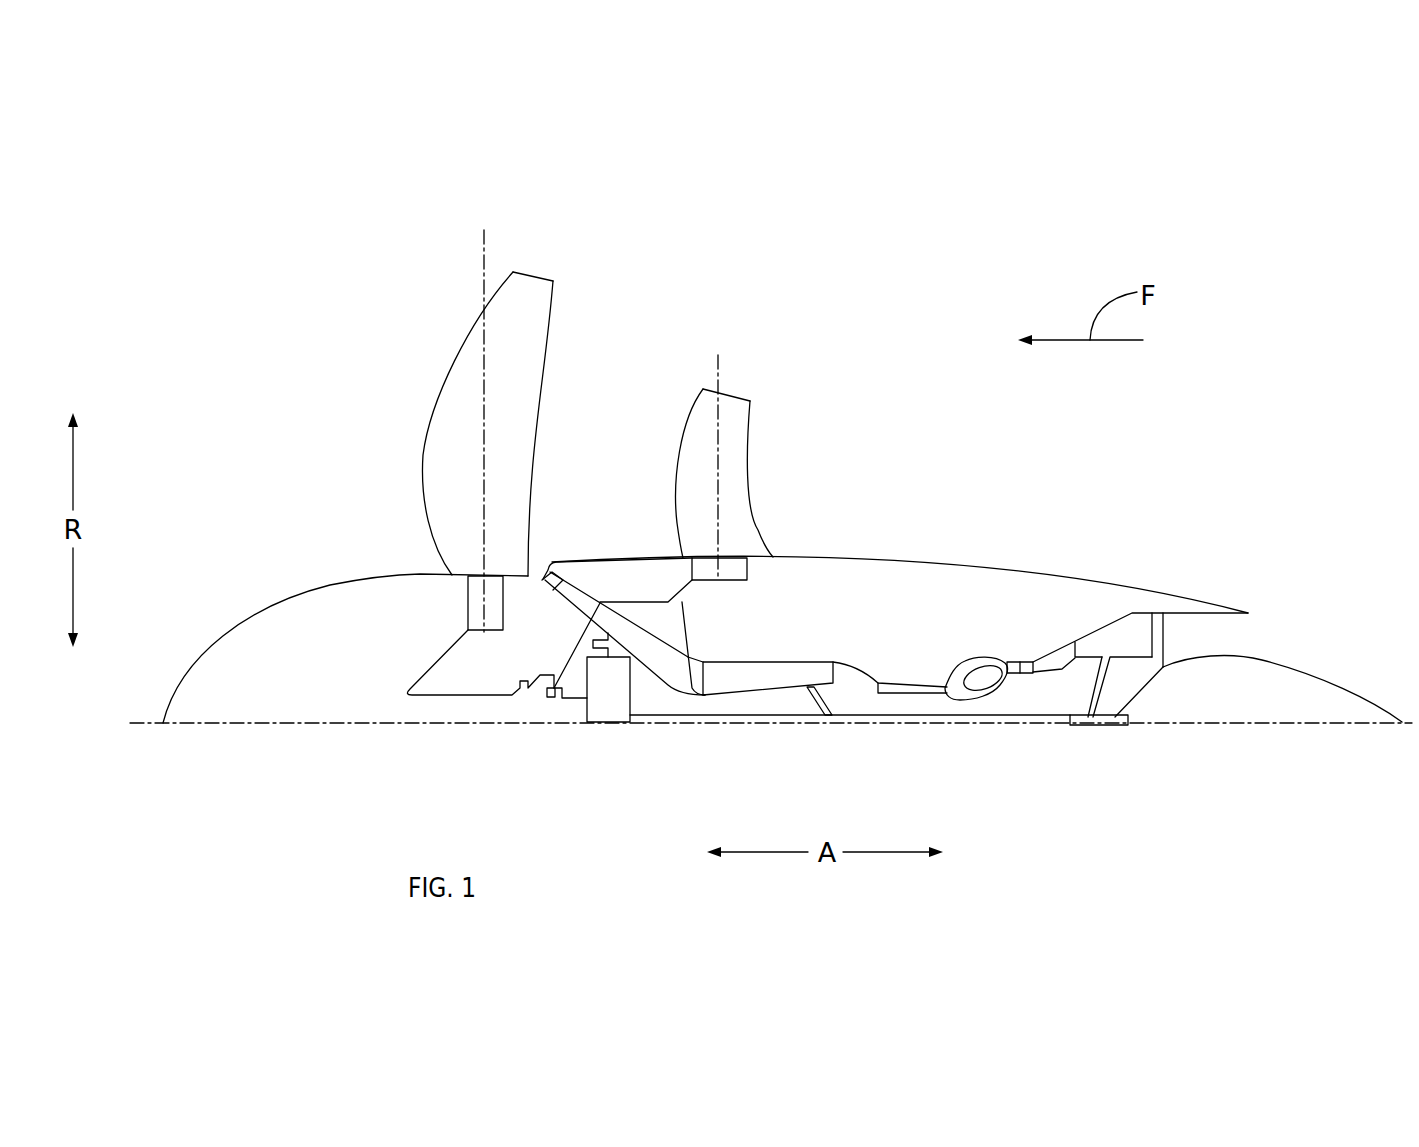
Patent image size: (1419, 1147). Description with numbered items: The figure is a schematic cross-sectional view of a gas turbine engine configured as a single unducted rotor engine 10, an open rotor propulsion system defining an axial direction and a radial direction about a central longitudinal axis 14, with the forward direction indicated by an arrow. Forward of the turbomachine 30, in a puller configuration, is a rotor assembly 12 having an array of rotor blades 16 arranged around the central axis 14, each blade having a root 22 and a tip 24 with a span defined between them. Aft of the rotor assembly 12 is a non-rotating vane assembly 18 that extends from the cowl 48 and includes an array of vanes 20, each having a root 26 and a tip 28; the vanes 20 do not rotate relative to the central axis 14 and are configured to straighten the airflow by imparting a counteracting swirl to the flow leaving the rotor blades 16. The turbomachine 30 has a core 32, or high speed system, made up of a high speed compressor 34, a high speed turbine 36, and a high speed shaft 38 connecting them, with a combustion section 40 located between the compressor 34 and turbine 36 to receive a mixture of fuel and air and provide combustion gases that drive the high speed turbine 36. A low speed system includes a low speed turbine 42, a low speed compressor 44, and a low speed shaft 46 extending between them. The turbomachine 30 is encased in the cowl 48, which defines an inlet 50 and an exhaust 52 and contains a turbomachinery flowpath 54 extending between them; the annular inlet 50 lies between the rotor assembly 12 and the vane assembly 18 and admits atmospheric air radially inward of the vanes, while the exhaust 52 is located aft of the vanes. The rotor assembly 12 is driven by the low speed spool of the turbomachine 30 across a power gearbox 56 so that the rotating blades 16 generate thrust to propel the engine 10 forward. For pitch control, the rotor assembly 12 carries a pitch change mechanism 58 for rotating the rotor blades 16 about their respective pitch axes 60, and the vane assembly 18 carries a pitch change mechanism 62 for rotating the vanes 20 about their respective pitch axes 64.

The single unducted rotor engine 10 is at (750, 235).
The rotor assembly 12 is at (352, 464).
The central longitudinal axis 14 is at (413, 727).
The rotor blades 16 is at (430, 418).
The vane assembly 18 is at (862, 305).
The vanes 20 is at (750, 480).
The root 22 is at (444, 565).
The tip 24 is at (537, 280).
The root 26 is at (763, 547).
The tip 28 is at (732, 393).
The turbomachine 30 is at (884, 526).
The core 32 is at (874, 604).
The high speed compressor 34 is at (912, 687).
The high speed turbine 36 is at (1010, 665).
The high speed shaft 38 is at (975, 703).
The combustion section 40 is at (988, 668).
The low speed turbine 42 is at (1140, 622).
The low speed compressor 44 is at (790, 665).
The low speed shaft 46 is at (892, 718).
The cowl 48 is at (1060, 575).
The inlet 50 is at (541, 548).
The exhaust 52 is at (1272, 639).
The turbomachinery flowpath 54 is at (668, 686).
The power gearbox 56 is at (605, 718).
The pitch change mechanism 58 is at (472, 607).
The pitch axes 60 is at (482, 260).
The pitch change mechanism 62 is at (735, 573).
The pitch axes 64 is at (712, 383).